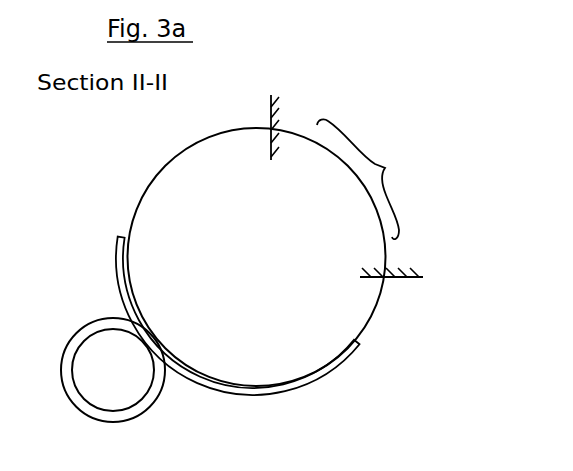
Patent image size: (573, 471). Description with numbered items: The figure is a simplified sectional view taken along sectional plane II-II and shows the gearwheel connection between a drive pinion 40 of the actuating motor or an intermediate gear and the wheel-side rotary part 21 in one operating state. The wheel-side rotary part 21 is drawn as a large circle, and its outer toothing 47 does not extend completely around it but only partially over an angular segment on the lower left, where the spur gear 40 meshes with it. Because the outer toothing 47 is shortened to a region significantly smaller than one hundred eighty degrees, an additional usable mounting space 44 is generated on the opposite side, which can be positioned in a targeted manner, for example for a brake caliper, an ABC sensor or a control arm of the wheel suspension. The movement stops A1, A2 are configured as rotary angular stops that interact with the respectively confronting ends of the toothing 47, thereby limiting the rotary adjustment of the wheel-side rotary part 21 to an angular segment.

The wheel-side rotary part 21 is at (291, 270).
The outer toothing 47 is at (112, 273).
The drive pinion 40 is at (132, 386).
The mounting space 44 is at (370, 179).
The movement stop A1 is at (269, 117).
The movement stop A2 is at (413, 277).